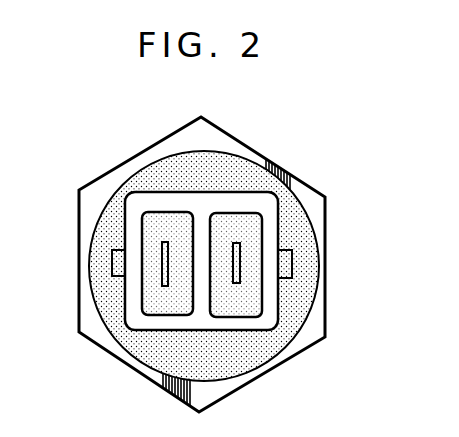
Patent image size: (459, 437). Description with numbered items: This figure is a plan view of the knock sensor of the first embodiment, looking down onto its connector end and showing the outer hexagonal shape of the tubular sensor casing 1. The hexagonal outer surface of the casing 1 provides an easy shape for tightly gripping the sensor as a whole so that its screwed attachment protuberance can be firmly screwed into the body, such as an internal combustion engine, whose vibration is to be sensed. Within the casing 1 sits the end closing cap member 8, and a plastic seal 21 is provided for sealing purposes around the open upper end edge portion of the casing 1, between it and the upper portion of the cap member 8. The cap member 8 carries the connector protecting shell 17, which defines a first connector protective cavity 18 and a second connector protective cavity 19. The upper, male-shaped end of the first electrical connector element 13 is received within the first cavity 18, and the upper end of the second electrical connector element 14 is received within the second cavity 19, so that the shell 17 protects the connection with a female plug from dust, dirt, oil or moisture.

The tubular sensor casing 1 is at (318, 204).
The end closing cap member 8 is at (260, 323).
The first electrical connector element 13 is at (236, 243).
The second electrical connector element 14 is at (165, 242).
The connector protecting shell 17 is at (272, 296).
The first connector protective cavity 18 is at (240, 311).
The second connector protective cavity 19 is at (170, 310).
The plastic seal 21 is at (158, 349).